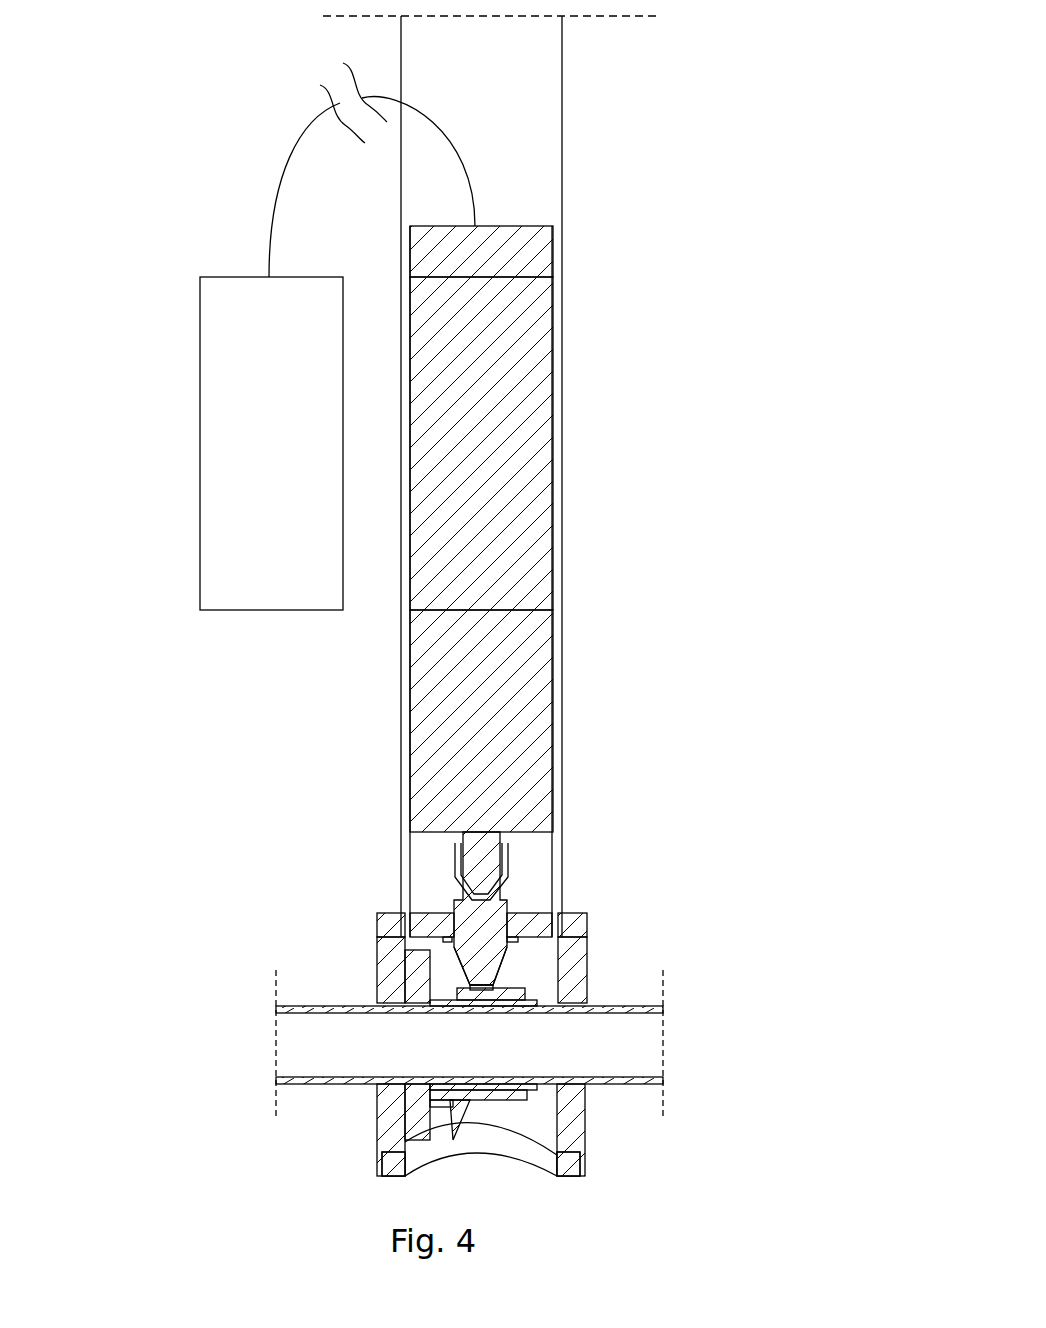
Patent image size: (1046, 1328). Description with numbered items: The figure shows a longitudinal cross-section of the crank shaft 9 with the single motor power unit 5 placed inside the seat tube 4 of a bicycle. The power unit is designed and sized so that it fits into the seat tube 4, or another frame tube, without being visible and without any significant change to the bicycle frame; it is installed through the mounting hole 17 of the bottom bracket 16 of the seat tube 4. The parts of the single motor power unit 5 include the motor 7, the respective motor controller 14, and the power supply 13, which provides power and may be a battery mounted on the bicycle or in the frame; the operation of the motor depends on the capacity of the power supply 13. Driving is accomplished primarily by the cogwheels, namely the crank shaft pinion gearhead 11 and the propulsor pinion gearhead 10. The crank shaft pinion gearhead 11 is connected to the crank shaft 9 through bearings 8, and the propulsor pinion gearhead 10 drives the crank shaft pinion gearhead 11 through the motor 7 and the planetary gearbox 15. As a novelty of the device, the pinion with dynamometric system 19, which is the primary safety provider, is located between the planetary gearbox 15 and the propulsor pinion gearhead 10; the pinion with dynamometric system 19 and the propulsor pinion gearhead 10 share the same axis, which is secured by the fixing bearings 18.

The seat tube 4 is at (547, 147).
The single motor power unit 5 is at (553, 332).
The motor 7 is at (480, 478).
The bearings 8 is at (507, 1000).
The crank shaft 9 is at (338, 1008).
The propulsor pinion gearhead 10 is at (480, 958).
The crank shaft pinion gearhead 11 is at (460, 977).
The power supply 13 is at (232, 468).
The motor controller 14 is at (523, 253).
The planetary gearbox 15 is at (480, 698).
The bottom bracket 16 is at (570, 1125).
The mounting hole 17 is at (513, 1142).
The fixing bearings 18 is at (435, 925).
The pinion with dynamometric system 19 is at (482, 863).